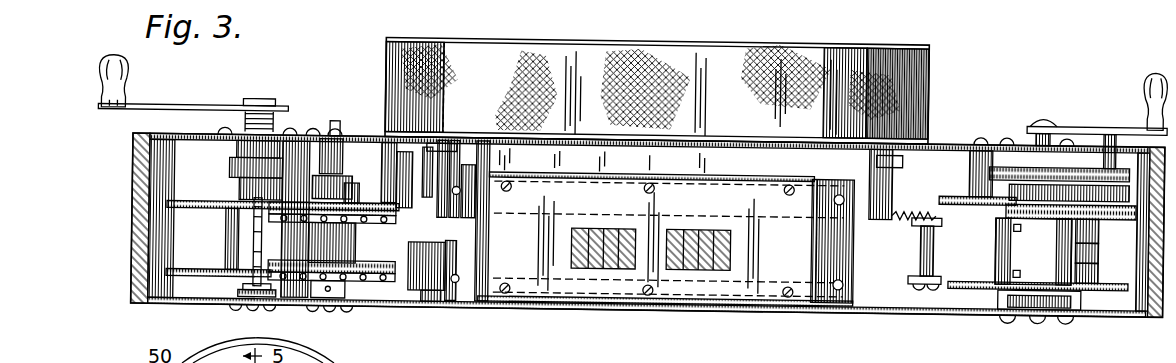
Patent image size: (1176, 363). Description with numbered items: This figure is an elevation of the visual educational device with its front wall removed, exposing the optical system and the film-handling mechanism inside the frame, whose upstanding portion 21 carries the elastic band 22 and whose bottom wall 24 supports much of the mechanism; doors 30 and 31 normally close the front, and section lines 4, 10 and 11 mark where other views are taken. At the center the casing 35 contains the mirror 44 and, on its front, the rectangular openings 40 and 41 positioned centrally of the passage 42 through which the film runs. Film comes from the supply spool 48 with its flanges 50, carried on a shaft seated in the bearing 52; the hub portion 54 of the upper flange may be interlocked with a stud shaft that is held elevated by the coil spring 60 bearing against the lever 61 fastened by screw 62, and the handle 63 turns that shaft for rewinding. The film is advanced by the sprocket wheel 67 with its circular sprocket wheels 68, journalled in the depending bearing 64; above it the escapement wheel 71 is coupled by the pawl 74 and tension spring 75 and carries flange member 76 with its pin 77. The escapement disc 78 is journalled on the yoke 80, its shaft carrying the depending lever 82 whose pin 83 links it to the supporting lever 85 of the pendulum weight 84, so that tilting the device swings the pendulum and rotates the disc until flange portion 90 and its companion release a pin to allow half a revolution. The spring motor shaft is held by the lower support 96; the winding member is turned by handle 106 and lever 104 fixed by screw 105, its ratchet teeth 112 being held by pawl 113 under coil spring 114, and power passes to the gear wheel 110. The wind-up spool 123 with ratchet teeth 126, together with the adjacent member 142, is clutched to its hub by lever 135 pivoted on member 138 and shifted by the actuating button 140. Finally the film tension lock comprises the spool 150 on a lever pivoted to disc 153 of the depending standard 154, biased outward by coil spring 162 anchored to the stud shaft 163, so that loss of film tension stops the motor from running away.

The section line 4- 4 is at (130, 134).
The section line 10- 10 is at (497, 113).
The section line 11- 11 is at (1026, 332).
The upstanding portion 21 is at (540, 39).
The elastic band 22 is at (927, 66).
The bottom wall 24 is at (670, 311).
The door 30 is at (133, 241).
The door 31 is at (1160, 289).
The casing 35 is at (800, 252).
The rectangular opening 40 is at (712, 256).
The rectangular opening 41 is at (608, 256).
The passage 42 is at (742, 211).
The mirror 44 is at (693, 224).
The supply spool 48 is at (222, 236).
The flange 50 is at (283, 216).
The bearing 52 is at (243, 283).
The hub portion 54 is at (232, 183).
The coil spring 60 is at (291, 109).
The lever 61 is at (176, 104).
The screw 62 is at (263, 98).
The handle 63 is at (104, 70).
The depending bearing 64 is at (336, 118).
The sprocket wheel 67 is at (322, 248).
The circular sprocket wheel 68 is at (380, 278).
The escapement wheel 71 is at (357, 197).
The pawl 74 is at (363, 220).
The tension spring 75 is at (363, 270).
The peripheral flange member 76 is at (293, 172).
The pin 77 is at (230, 161).
The escapement disc 78 is at (405, 205).
The yoke 80 is at (440, 132).
The depending lever 82 is at (466, 198).
The pin 83 is at (613, 141).
The weight 84 is at (430, 299).
The supporting lever 85 is at (447, 228).
The peripheral flange portion 90 is at (405, 150).
The lower support 96 is at (610, 228).
The lever 104 is at (1067, 114).
The screw 105 is at (1035, 109).
The handle 106 is at (1148, 56).
The gear wheel 110 is at (1090, 252).
The ratchet teeth 112 is at (1110, 121).
The pawl 113 is at (953, 354).
The coil spring 114 is at (1112, 351).
The wind-up spool 123 is at (993, 237).
The ratchet teeth 126 is at (1088, 244).
The lever 135 is at (1000, 280).
The member 138 is at (1088, 268).
The actuating button 140 is at (1030, 311).
The column 142 is at (1062, 226).
The spool 150 is at (917, 255).
The disc 153 is at (947, 183).
The depending standard 154 is at (977, 151).
The coil spring 162 is at (913, 206).
The depending stud shaft 163 is at (887, 169).